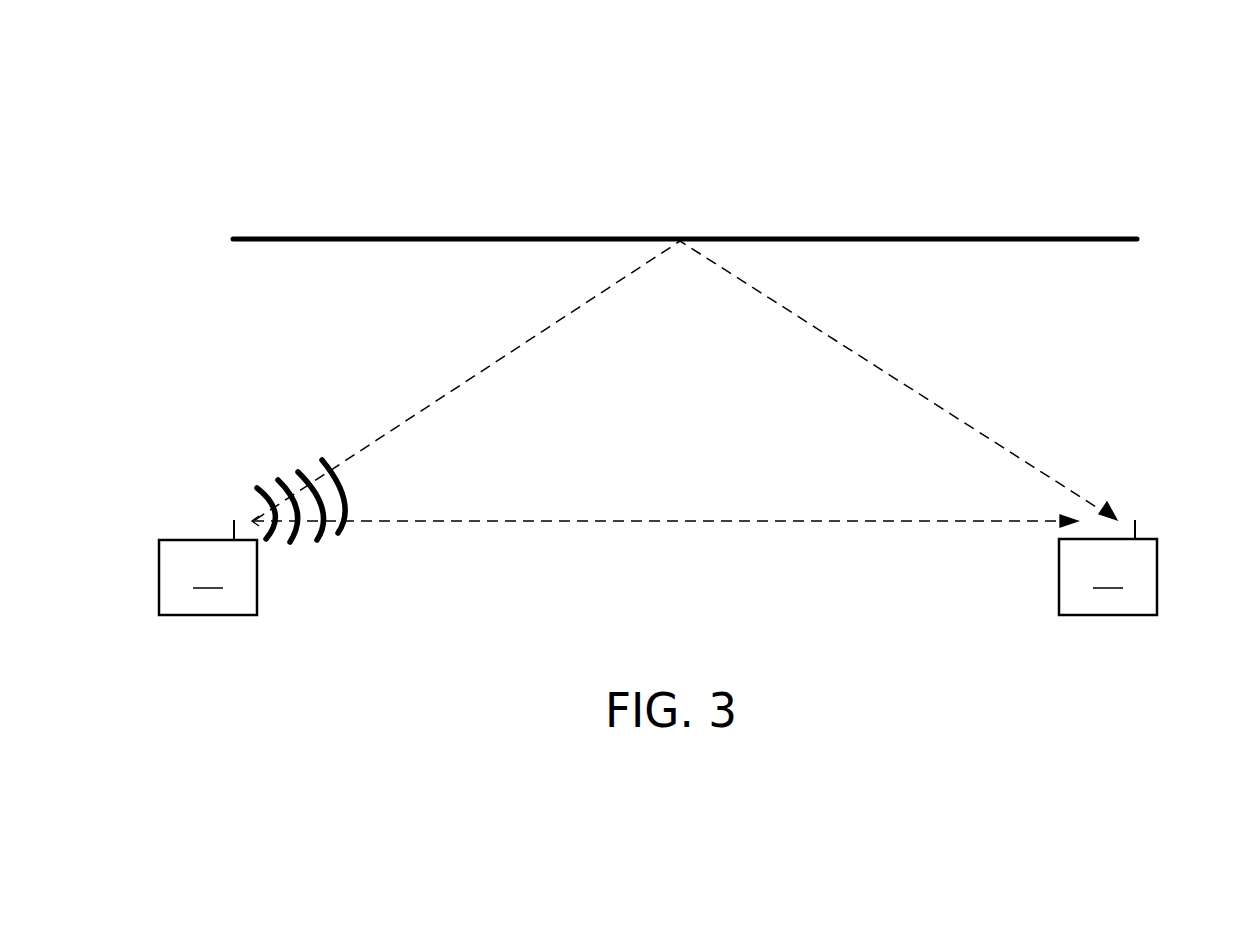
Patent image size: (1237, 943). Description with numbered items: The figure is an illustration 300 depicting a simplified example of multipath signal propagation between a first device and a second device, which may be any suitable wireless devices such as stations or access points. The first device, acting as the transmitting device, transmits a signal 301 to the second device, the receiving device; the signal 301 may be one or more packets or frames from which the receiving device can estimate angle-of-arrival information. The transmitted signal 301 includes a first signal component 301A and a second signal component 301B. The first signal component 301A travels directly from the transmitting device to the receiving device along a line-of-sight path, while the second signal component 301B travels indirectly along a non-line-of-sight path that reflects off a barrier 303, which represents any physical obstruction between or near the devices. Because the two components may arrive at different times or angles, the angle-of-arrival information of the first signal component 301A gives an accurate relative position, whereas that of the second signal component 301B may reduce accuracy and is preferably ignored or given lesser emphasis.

The illustration 300 is at (1121, 108).
The signal 301 is at (291, 545).
The first signal component 301A is at (725, 525).
The second signal component 301B is at (811, 327).
The barrier 303 is at (685, 223).